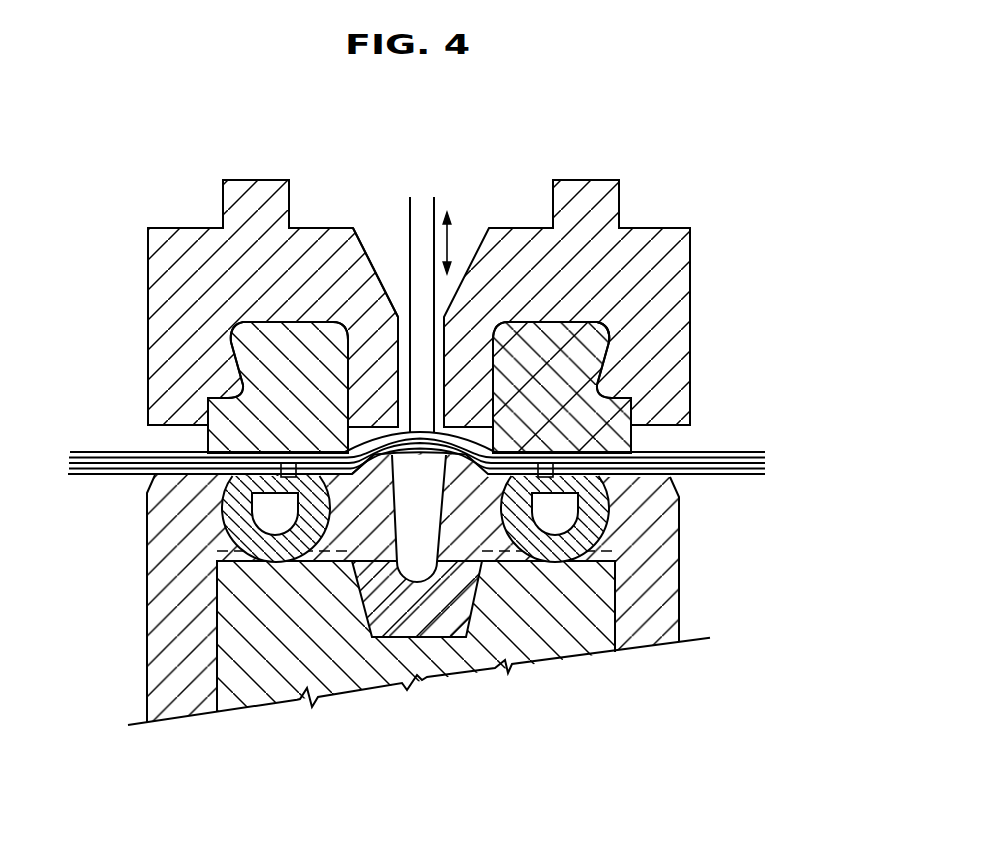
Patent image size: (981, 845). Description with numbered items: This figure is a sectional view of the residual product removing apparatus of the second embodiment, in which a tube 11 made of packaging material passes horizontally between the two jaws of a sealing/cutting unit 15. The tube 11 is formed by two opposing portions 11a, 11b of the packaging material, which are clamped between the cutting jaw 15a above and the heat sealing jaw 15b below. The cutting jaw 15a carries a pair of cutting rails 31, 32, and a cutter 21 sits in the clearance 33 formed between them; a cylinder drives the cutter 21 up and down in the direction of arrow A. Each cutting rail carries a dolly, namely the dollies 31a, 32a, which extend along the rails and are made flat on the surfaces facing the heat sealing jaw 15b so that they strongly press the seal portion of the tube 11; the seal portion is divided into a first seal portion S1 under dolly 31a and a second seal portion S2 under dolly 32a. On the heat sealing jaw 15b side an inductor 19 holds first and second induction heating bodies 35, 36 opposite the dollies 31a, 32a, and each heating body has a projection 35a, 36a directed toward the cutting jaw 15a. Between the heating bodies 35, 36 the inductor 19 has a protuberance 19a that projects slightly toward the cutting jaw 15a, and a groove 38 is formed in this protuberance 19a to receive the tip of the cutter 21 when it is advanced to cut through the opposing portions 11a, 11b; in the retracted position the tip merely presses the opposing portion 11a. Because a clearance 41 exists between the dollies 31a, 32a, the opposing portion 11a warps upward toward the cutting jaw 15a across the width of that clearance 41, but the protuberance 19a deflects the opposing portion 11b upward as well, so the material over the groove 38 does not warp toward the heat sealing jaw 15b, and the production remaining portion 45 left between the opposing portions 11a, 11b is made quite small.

The tube 11 is at (690, 447).
The opposing portion 11a is at (130, 452).
The opposing portion 11b is at (89, 477).
The sealing/cutting unit 15 is at (445, 461).
The cutting jaw 15a is at (464, 298).
The heat sealing jaw 15b is at (430, 609).
The inductor 19 is at (130, 563).
The protuberance 19a is at (370, 480).
The cutter 21 is at (423, 212).
The cutting rail 31 is at (313, 250).
The dolly 31a is at (253, 333).
The cutting rail 32 is at (510, 251).
The dolly 32a is at (586, 338).
The clearance 33 is at (400, 302).
The clearance 41 is at (608, 332).
The first induction heating body 35 is at (258, 542).
The projection 35a is at (288, 500).
The second induction heating body 36 is at (572, 547).
The projection 36a is at (548, 480).
The groove 38 is at (421, 447).
The production remaining portion 45 is at (510, 520).
The arrow A is at (460, 242).
The first seal portion S1 is at (278, 448).
The second seal portion S2 is at (558, 447).